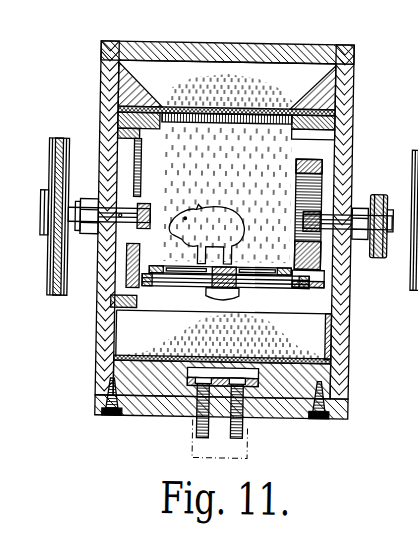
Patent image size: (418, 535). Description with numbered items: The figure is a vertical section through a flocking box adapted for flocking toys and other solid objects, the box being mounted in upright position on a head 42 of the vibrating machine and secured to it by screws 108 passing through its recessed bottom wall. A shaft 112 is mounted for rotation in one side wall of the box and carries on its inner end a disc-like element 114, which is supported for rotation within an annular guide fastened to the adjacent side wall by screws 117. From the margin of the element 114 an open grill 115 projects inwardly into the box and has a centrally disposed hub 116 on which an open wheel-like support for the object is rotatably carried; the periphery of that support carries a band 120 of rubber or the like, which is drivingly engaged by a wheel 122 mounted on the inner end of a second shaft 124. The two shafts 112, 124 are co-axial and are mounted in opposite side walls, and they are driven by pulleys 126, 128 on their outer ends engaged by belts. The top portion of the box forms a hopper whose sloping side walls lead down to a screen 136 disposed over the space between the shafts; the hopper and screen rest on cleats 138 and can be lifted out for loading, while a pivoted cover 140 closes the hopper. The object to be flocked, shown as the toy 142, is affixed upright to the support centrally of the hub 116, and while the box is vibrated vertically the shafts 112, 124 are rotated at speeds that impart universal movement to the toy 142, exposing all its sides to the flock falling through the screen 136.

The head 42 is at (247, 444).
The screws 108 is at (235, 432).
The shaft 112 is at (112, 212).
The disc-like element 114 is at (119, 277).
The open grill 115 is at (251, 283).
The hub 116 is at (201, 287).
The screws 117 is at (120, 329).
The band 120 is at (317, 271).
The wheel 122 is at (315, 161).
The second shaft 124 is at (340, 211).
The pulley 126 is at (49, 168).
The pulley 128 is at (385, 252).
The screen 136 is at (205, 110).
The cleats 138 is at (146, 128).
The cover 140 is at (219, 48).
The toy 142 is at (207, 234).